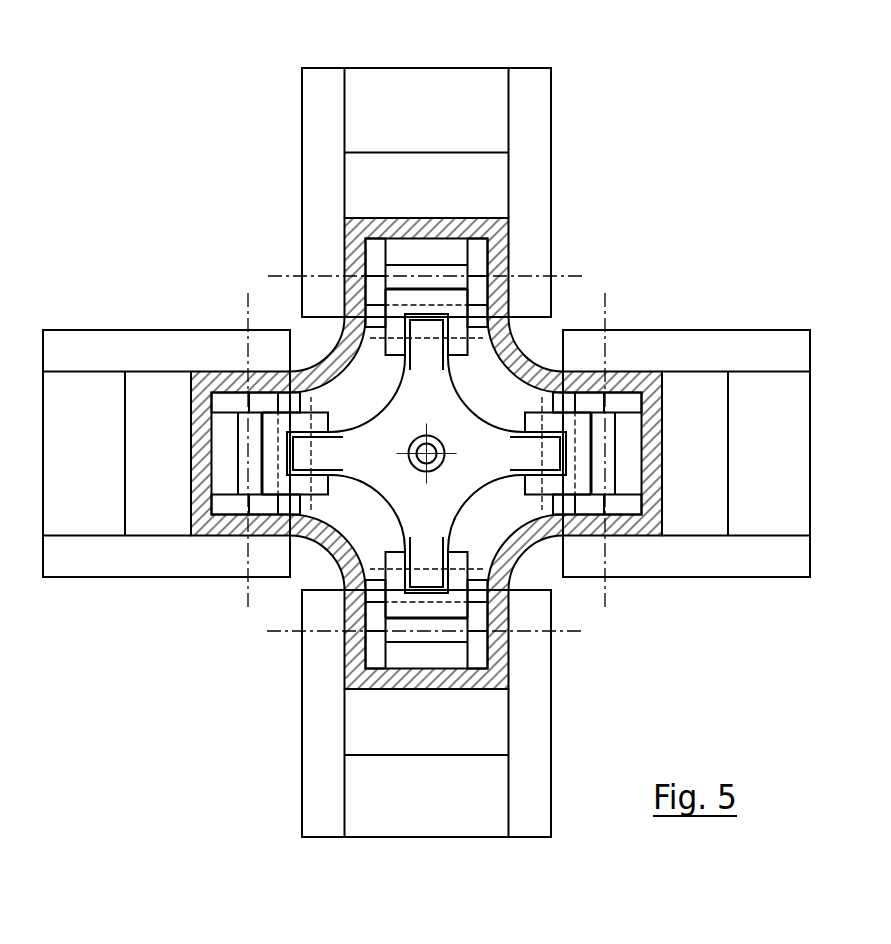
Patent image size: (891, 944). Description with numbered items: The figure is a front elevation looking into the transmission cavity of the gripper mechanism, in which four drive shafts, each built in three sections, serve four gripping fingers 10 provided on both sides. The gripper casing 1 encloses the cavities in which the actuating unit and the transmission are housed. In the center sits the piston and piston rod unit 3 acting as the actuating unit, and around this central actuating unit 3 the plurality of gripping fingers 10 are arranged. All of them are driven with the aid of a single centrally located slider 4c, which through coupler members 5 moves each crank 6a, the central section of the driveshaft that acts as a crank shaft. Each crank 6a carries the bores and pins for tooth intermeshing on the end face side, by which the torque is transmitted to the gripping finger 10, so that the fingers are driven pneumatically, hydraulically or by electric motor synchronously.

The casing 1 is at (468, 222).
The piston and piston rod unit 3 is at (423, 447).
The slider 4c is at (408, 490).
The coupler member 5 is at (580, 430).
The crank 6a is at (607, 467).
The gripping finger 10 is at (262, 115).